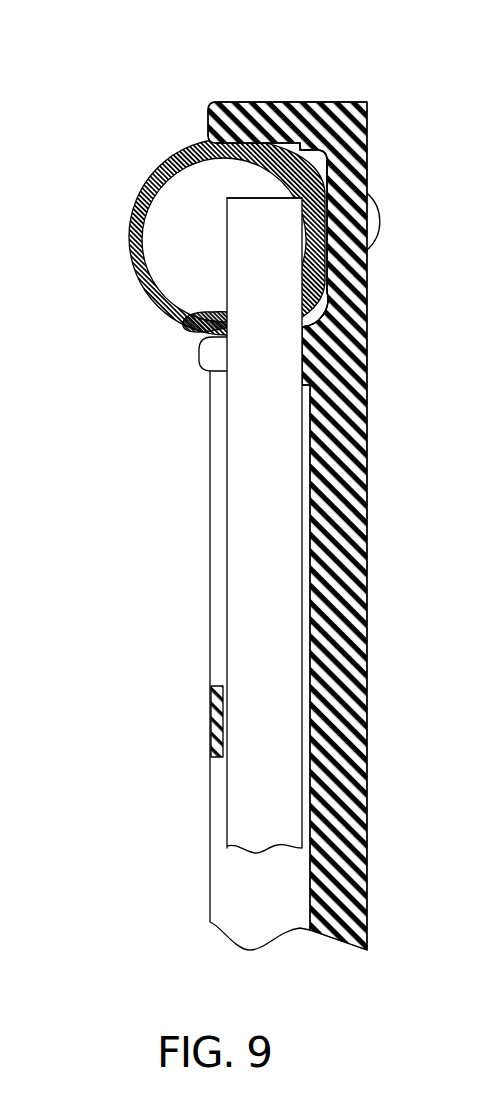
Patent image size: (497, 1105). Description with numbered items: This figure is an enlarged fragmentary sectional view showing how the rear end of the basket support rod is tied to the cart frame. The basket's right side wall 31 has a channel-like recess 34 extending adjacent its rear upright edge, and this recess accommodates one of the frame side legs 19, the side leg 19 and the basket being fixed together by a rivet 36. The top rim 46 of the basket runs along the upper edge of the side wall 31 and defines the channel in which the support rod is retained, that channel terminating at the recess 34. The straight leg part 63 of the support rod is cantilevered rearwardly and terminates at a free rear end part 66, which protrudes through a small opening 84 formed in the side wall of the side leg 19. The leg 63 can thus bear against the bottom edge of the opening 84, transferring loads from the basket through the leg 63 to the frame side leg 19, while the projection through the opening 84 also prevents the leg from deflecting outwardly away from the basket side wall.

The side leg 19 is at (127, 239).
The right side wall 31 is at (368, 683).
The channel-like recess 34 is at (302, 160).
The rivet 36 is at (372, 215).
The top rim 46 is at (368, 465).
The right straight leg part 63 is at (247, 792).
The free rear end part 66 is at (240, 218).
The opening 84 is at (222, 319).